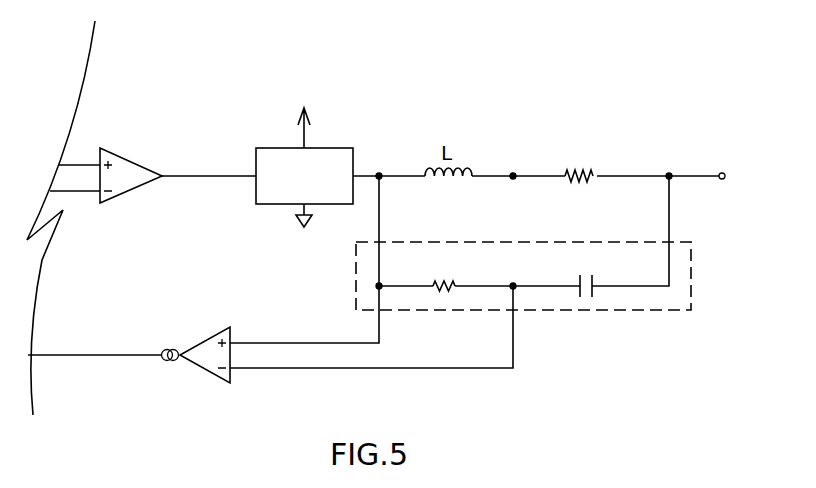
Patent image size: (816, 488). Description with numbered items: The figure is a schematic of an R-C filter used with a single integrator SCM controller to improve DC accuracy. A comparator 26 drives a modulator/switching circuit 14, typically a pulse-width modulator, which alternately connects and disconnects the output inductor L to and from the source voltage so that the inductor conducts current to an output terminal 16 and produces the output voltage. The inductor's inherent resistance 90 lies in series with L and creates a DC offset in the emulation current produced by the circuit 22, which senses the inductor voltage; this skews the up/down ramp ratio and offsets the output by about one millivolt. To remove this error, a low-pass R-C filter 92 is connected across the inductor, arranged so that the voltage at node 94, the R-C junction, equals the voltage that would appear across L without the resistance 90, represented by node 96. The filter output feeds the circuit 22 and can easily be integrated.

The modulator/switching circuit 14 is at (328, 148).
The output terminal 16 is at (722, 172).
The circuit 22 is at (197, 342).
The comparator 26 is at (130, 190).
The inherent resistance 90 is at (582, 156).
The low-pass R-C filter 92 is at (623, 311).
The node 94 is at (513, 285).
The node 96 is at (513, 178).